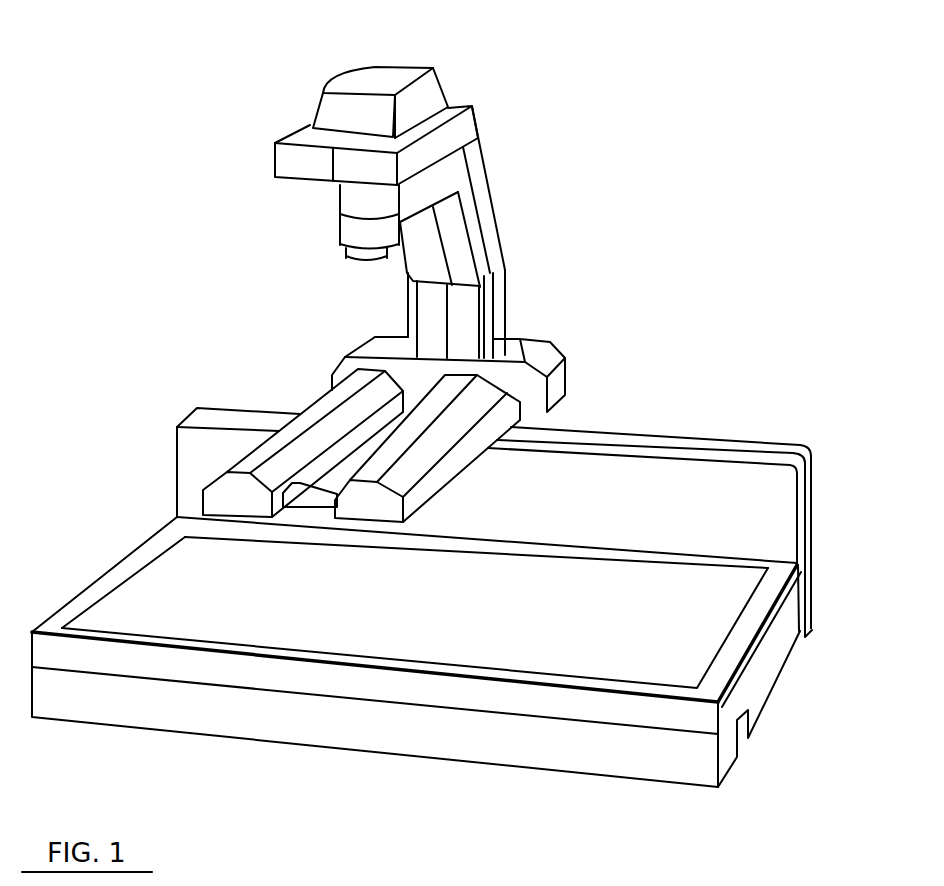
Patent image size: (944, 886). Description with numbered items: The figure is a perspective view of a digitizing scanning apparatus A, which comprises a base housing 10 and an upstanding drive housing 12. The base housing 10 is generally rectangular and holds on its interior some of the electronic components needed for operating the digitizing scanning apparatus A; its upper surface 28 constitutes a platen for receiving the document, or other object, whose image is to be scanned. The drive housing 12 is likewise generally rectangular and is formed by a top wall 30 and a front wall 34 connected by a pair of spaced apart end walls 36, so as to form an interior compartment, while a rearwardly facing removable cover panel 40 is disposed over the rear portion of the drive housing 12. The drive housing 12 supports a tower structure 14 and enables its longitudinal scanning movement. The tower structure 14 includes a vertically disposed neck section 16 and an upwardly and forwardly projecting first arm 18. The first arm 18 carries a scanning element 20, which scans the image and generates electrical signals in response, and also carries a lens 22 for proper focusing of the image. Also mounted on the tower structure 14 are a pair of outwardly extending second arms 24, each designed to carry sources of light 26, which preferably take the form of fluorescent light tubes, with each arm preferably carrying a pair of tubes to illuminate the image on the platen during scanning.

The base housing 10 is at (582, 742).
The drive housing 12 is at (692, 442).
The tower structure 14 is at (495, 207).
The neck section 16 is at (468, 137).
The first arm 18 is at (300, 137).
The scanning element 20 is at (360, 82).
The lens 22 is at (343, 228).
The second arms 24 is at (333, 402).
The sources of light 26 is at (222, 497).
The upper surface 28 is at (170, 588).
The top wall 30 is at (593, 435).
The front wall 34 is at (668, 517).
The end walls 36 is at (177, 443).
The removable cover panel 40 is at (238, 412).
The digitizing scanning apparatus A is at (525, 122).